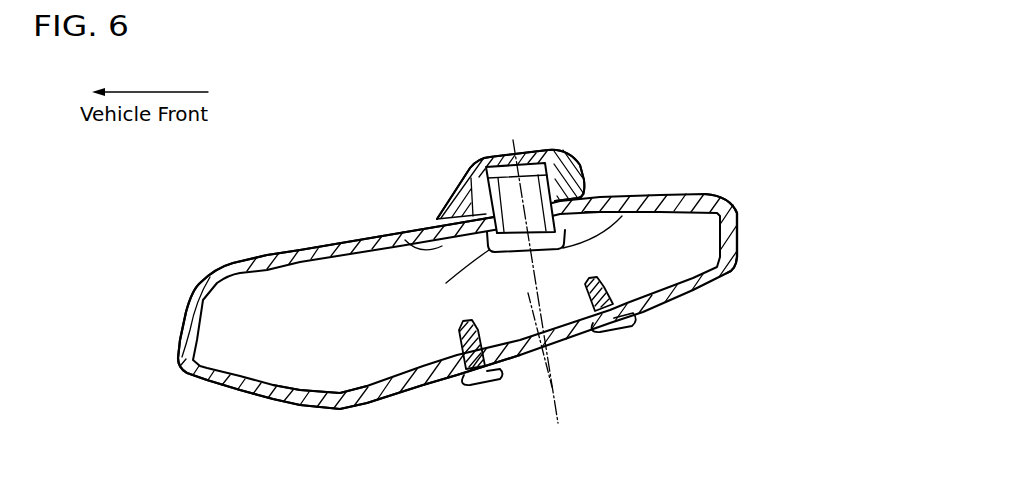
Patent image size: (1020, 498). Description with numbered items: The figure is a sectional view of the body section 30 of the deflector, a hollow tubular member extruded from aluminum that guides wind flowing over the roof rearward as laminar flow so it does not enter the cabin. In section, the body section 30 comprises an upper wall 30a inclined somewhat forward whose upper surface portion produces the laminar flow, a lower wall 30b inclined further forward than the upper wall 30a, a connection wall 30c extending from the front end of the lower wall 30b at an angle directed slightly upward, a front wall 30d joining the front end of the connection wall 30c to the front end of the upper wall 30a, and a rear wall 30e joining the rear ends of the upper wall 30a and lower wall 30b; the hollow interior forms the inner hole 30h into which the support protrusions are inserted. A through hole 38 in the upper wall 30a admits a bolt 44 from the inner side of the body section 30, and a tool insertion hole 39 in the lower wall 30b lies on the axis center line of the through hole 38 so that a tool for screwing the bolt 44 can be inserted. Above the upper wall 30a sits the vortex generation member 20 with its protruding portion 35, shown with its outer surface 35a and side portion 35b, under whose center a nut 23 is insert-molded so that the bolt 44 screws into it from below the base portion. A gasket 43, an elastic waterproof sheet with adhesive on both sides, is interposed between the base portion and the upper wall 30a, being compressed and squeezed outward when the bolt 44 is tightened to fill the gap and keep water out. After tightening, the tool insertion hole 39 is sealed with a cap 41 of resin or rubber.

The vortex generation member 20 is at (550, 150).
The nut 23 is at (577, 160).
The body section 30 is at (682, 197).
The upper wall 30a is at (280, 256).
The lower wall 30b is at (418, 386).
The connection wall 30c is at (265, 399).
The front wall 30d is at (182, 327).
The rear wall 30e is at (734, 231).
The inner hole 30h is at (340, 337).
The protruding portion 35 is at (527, 150).
The top surface of stud base 35a is at (503, 155).
The flange of stud base 35b is at (449, 185).
The through hole 38 is at (620, 224).
The tool insertion hole 39 is at (594, 342).
The cap 41 is at (569, 347).
The gasket 43 is at (400, 236).
The bolt 44 is at (490, 262).